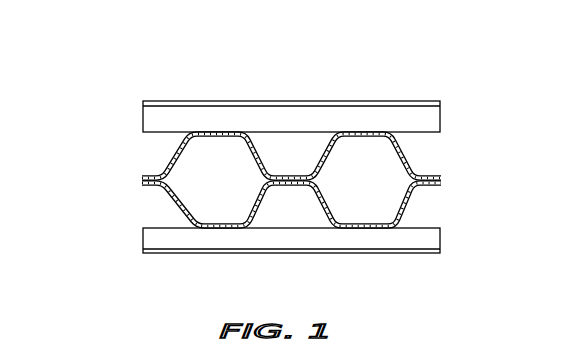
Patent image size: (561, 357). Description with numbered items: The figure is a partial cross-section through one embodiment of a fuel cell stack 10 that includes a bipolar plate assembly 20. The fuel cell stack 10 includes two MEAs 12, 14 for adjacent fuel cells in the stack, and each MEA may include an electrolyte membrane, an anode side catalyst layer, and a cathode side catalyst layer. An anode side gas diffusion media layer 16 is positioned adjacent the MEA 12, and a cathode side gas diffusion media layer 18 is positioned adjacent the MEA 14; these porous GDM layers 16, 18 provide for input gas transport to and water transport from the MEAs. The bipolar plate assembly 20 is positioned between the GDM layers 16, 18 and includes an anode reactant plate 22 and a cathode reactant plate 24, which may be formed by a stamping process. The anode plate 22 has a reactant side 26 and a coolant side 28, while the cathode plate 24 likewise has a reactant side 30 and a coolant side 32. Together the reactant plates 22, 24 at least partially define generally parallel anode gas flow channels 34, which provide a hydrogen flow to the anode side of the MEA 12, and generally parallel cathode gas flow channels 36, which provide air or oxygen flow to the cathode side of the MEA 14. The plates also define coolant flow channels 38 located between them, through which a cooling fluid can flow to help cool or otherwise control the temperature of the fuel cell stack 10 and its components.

The fuel cell stack 10 is at (310, 173).
The MEA 12 is at (291, 91).
The MEA 14 is at (291, 268).
The anode side gas diffusion media layer 16 is at (242, 118).
The cathode side gas diffusion media layer 18 is at (387, 242).
The bipolar plate assembly 20 is at (310, 177).
The anode reactant plate 22 is at (173, 163).
The cathode reactant plate 24 is at (172, 200).
The reactant side 26 is at (326, 152).
The coolant side 28 is at (392, 152).
The reactant side 30 is at (253, 212).
The coolant side 32 is at (185, 211).
The anode gas flow channels 34 is at (283, 143).
The cathode gas flow channels 36 is at (302, 215).
The coolant flow channels 38 is at (213, 160).